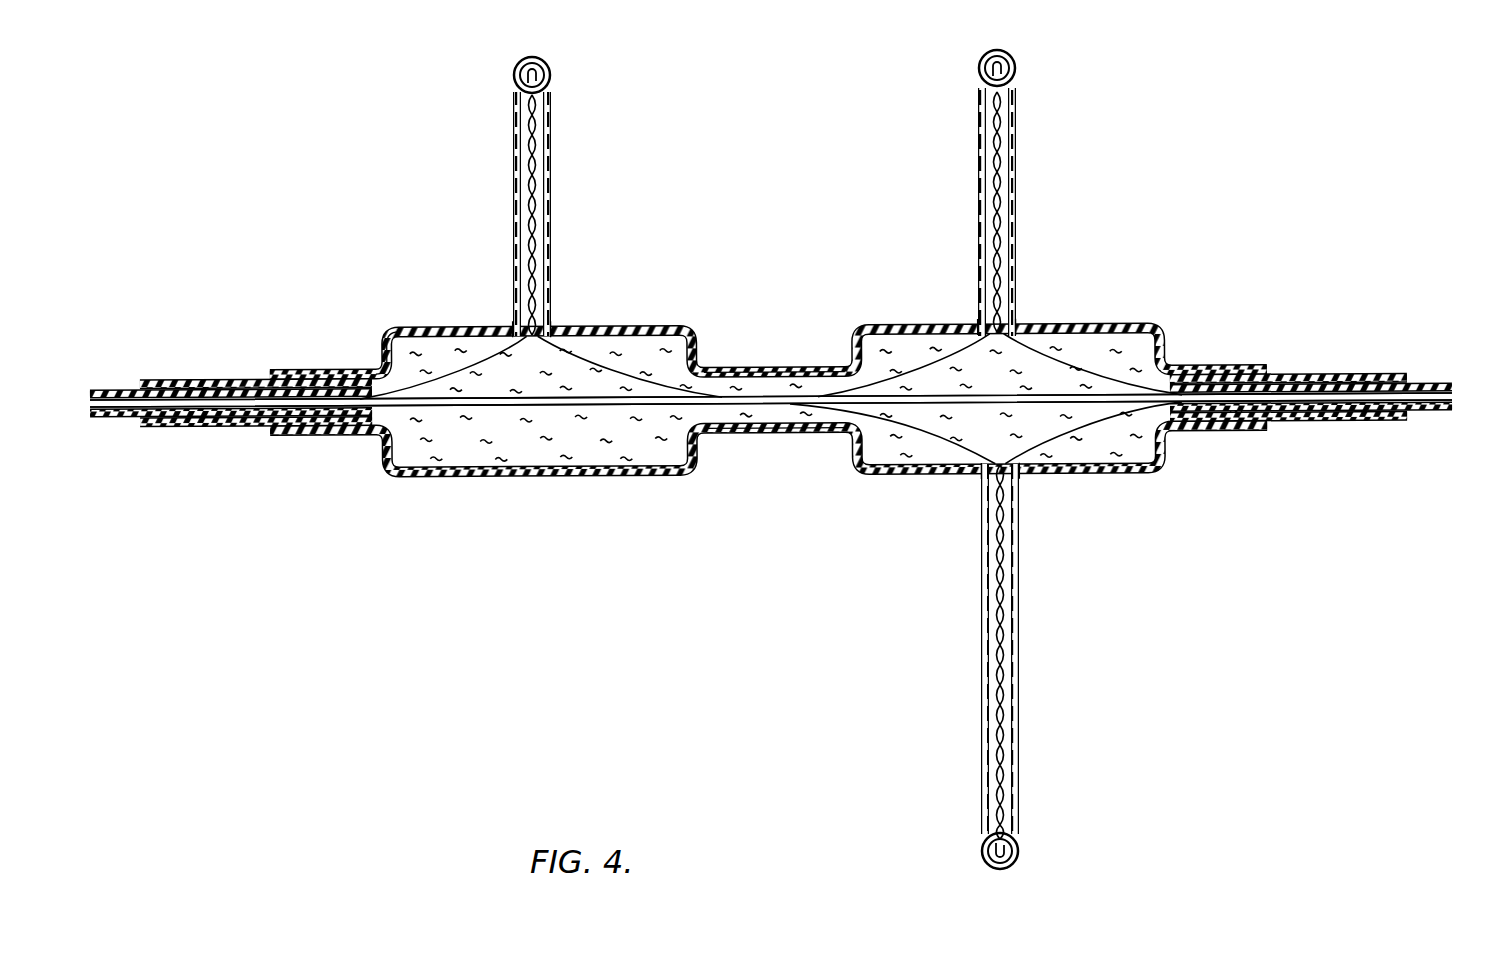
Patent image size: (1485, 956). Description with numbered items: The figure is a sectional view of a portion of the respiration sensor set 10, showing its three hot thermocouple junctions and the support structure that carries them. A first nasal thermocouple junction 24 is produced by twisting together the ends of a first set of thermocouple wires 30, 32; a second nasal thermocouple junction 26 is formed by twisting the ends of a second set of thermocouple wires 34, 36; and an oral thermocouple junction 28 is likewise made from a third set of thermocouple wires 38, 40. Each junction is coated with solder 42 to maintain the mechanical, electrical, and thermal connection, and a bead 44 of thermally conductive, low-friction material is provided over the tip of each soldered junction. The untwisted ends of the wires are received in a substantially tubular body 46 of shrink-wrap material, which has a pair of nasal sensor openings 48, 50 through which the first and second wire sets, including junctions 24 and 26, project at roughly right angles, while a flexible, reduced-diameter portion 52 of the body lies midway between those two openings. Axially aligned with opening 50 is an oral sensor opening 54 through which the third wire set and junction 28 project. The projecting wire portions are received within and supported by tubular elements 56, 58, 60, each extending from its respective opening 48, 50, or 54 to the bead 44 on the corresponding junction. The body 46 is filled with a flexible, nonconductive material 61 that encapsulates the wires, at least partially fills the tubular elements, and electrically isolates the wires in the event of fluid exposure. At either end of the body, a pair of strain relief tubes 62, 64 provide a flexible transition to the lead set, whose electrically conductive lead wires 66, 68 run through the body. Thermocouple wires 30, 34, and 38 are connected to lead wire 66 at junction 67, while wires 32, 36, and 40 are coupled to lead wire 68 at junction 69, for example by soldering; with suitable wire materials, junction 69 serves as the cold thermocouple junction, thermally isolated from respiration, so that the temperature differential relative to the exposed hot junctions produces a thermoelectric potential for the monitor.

The respiration sensor set 10 is at (418, 588).
The first nasal thermocouple junction 24 is at (549, 60).
The second nasal thermocouple junction 26 is at (984, 56).
The oral thermocouple junction 28 is at (1016, 866).
The thermocouple wire 30 is at (412, 378).
The thermocouple wire 32 is at (605, 372).
The thermocouple wire 34 is at (926, 366).
The thermocouple wire 36 is at (1046, 366).
The thermocouple wire 38 is at (922, 446).
The thermocouple wire 40 is at (1075, 450).
The solder 42 is at (518, 77).
The bead 44 is at (524, 70).
The tubular body 46 is at (588, 476).
The first nasal sensor opening 48 is at (515, 326).
The second nasal sensor opening 50 is at (1018, 326).
The reduced-diameter portion 52 is at (736, 433).
The oral sensor opening 54 is at (979, 474).
The tubular element 56 is at (553, 160).
The tubular element 58 is at (978, 150).
The tubular element 60 is at (1021, 633).
The flexible nonconductive material 61 is at (518, 452).
The strain relief tube 62 is at (218, 426).
The strain relief tube 64 is at (1368, 376).
The lead wire 66 is at (310, 394).
The junction 67 is at (270, 416).
The lead wire 68 is at (1263, 394).
The junction 69 is at (1305, 412).